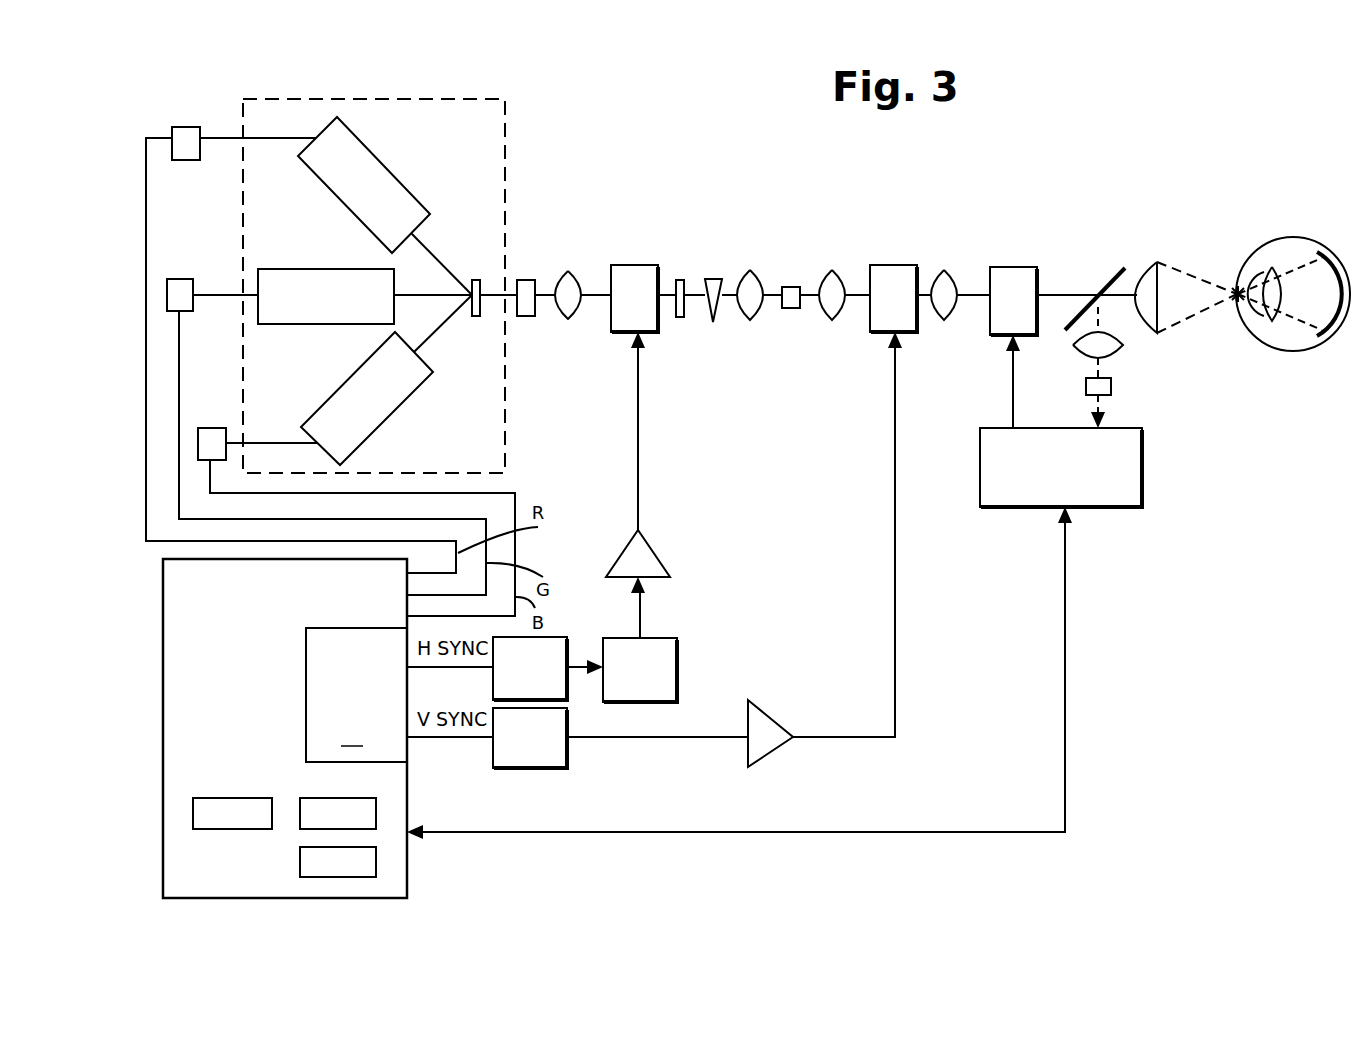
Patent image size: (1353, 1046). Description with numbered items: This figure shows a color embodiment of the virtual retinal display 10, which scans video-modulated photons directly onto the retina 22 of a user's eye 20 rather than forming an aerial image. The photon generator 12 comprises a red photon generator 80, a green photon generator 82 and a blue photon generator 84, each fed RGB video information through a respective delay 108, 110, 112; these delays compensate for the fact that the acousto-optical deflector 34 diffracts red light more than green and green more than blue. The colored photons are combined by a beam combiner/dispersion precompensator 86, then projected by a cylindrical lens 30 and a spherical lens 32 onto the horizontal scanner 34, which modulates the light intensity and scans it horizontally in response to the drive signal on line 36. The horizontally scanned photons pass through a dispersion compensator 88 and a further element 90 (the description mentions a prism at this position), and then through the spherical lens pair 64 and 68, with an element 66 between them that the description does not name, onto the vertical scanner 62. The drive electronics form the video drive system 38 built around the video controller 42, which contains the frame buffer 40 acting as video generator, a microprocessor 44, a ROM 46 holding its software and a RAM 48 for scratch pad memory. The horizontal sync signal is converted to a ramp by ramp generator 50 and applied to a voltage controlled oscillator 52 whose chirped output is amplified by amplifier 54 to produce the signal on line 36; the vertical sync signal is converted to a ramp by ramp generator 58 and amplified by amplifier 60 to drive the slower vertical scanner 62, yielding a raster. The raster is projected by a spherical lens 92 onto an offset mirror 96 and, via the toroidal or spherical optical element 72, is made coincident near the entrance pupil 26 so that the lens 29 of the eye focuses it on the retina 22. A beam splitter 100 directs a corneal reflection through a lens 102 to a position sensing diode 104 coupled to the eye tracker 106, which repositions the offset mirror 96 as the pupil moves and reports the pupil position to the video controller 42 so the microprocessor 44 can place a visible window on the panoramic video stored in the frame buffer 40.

The virtual retinal display 10 is at (1200, 470).
The photon generator 12 is at (505, 163).
The eye 20 is at (1293, 347).
The retina 22 is at (1318, 254).
The entrance pupil 26 is at (1236, 290).
The lens of the eye 29 is at (1272, 268).
The cylindrical lens 30 is at (523, 317).
The spherical lens 32 is at (568, 319).
The acousto-optical deflector 34 is at (630, 265).
The line 36 is at (637, 418).
The video drive system 38 is at (745, 505).
The frame buffer 40 is at (356, 695).
The video controller 42 is at (303, 748).
The microprocessor 44 is at (203, 829).
The ROM 46 is at (376, 862).
The RAM 48 is at (376, 810).
The ramp generator 50 is at (568, 648).
The voltage controlled oscillator 52 is at (678, 677).
The amplifier 54 is at (653, 553).
The ramp generator 58 is at (568, 755).
The amplifier 60 is at (780, 743).
The vertical scanner 62 is at (903, 265).
The spherical lens 64 is at (750, 272).
The aperture 66 is at (793, 287).
The spherical lens 68 is at (832, 272).
The toroidal or spherical optical element 72 is at (1152, 262).
The red photon generator 80 is at (370, 150).
The green photon generator 82 is at (337, 324).
The blue photon generator 84 is at (380, 425).
The beam combiner/dispersion precompensator 86 is at (477, 280).
The dispersion compensator 88 is at (678, 278).
The optical element 90 is at (718, 278).
The spherical lens 92 is at (944, 270).
The offset mirror 96 is at (1000, 267).
The beam splitter 100 is at (1105, 283).
The lens 102 is at (1123, 345).
The position sensing diode 104 is at (1111, 387).
The eye tracker 106 is at (980, 462).
The delay 108 is at (183, 127).
The delay 110 is at (172, 279).
The delay 112 is at (220, 428).